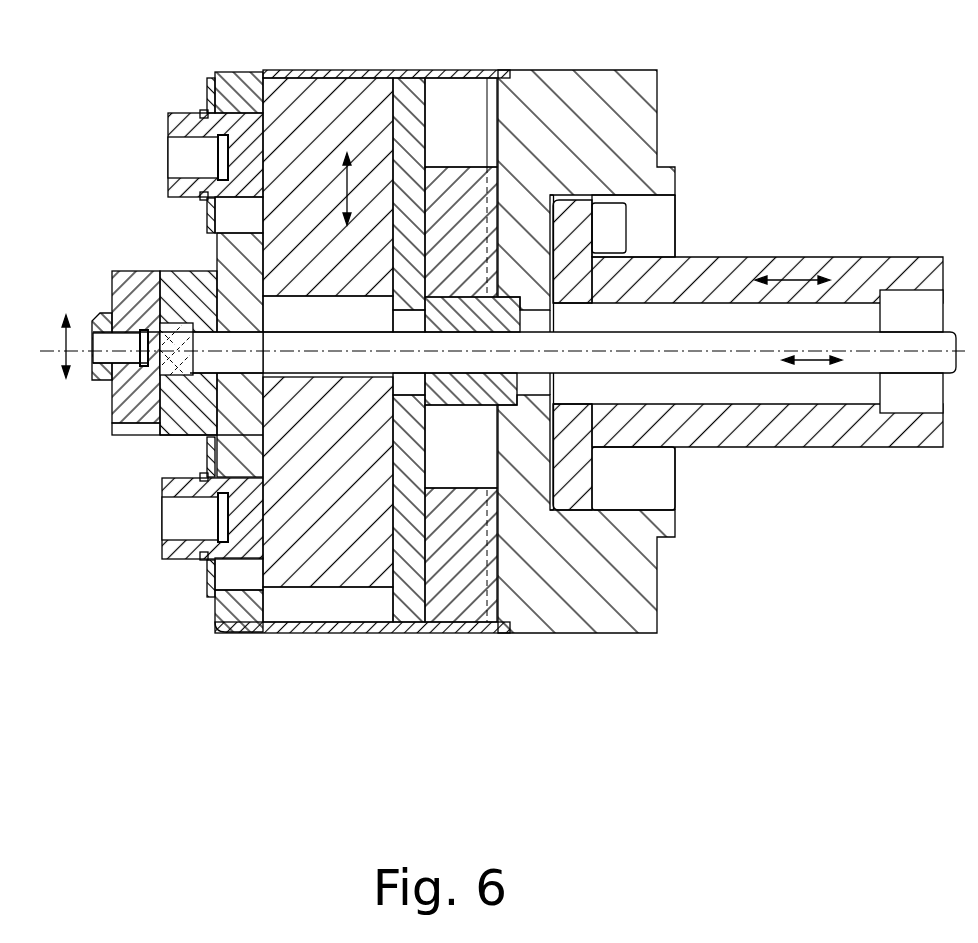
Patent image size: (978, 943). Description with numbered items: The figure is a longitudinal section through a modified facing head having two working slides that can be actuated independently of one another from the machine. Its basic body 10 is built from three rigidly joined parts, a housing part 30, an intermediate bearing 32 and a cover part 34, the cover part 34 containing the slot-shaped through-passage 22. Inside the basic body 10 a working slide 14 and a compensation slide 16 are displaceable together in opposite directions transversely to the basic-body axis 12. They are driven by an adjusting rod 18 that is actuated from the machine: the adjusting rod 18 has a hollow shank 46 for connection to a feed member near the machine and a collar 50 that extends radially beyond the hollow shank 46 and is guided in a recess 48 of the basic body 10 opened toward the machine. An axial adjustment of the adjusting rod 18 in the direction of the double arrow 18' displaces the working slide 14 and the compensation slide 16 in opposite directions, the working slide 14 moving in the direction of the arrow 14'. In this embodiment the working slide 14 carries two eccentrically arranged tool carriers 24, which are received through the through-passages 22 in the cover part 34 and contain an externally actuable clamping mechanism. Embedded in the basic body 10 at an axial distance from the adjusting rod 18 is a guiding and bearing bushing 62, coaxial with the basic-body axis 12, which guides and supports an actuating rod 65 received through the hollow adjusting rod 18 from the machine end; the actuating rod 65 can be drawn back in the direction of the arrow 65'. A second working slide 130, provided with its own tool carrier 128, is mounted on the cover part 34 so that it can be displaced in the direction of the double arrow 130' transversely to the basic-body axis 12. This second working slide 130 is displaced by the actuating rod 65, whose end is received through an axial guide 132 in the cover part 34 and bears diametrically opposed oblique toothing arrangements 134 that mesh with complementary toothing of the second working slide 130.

The basic body 10 is at (547, 607).
The basic-body axis 12 is at (720, 350).
The working slide 14 is at (362, 415).
The arrow of working slide displacement 14' is at (316, 182).
The compensation slide 16 is at (450, 575).
The adjusting rod 18 is at (734, 495).
The double arrow of adjusting rod axial adjustment 18' is at (816, 230).
The through-passage 22 is at (205, 207).
The tool carrier 24 is at (200, 112).
The housing part 30 is at (630, 595).
The intermediate bearing 32 is at (412, 603).
The cover part 34 is at (214, 620).
The hollow shank 46 is at (860, 437).
The recess 48 is at (632, 502).
The collar 50 is at (578, 495).
The guiding and bearing bushing 62 is at (488, 392).
The actuating rod 65 is at (861, 271).
The arrow of actuating rod retraction 65' is at (697, 422).
The tool carrier 128 is at (92, 312).
The second working slide 130 is at (102, 428).
The double arrow of second working slide displacement 130' is at (41, 367).
The axial guide 132 is at (238, 333).
The oblique toothing arrangements 134 is at (110, 380).